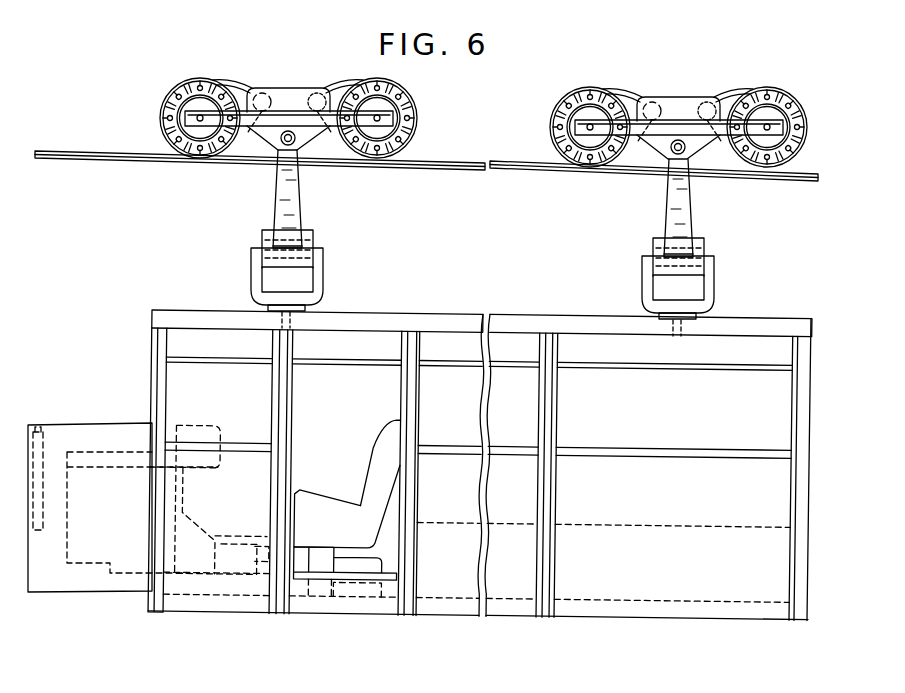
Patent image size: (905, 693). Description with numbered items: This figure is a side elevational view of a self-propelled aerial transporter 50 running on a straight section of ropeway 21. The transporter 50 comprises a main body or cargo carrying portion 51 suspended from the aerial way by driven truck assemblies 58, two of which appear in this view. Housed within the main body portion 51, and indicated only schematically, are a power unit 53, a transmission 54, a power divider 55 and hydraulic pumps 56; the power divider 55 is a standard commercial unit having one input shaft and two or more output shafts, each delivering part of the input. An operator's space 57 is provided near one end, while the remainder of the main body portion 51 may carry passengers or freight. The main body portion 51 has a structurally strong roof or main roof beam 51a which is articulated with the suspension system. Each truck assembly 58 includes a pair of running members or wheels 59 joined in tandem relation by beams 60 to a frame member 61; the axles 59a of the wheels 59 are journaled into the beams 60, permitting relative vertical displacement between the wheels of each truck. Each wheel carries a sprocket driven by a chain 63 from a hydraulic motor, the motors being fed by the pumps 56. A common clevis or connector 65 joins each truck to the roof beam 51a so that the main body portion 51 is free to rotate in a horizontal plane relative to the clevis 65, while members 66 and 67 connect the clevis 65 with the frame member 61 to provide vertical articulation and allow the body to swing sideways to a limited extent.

The ropeway 21 is at (496, 175).
The transporter 50 is at (206, 614).
The main body portion 51 is at (470, 617).
The main roof beam 51a is at (500, 322).
The power unit 53 is at (105, 553).
The transmission 54 is at (243, 567).
The power divider 55 is at (323, 588).
The hydraulic pumps 56 is at (363, 582).
The operator's space 57 is at (318, 486).
The truck assemblies 58 is at (466, 124).
The wheels 59 is at (163, 110).
The axles 59a is at (199, 116).
The beams 60 is at (215, 121).
The frame member 61 is at (299, 95).
The chain 63 is at (285, 86).
The clevis 65 is at (318, 293).
The connecting member 66 is at (308, 248).
The connecting member 67 is at (297, 199).